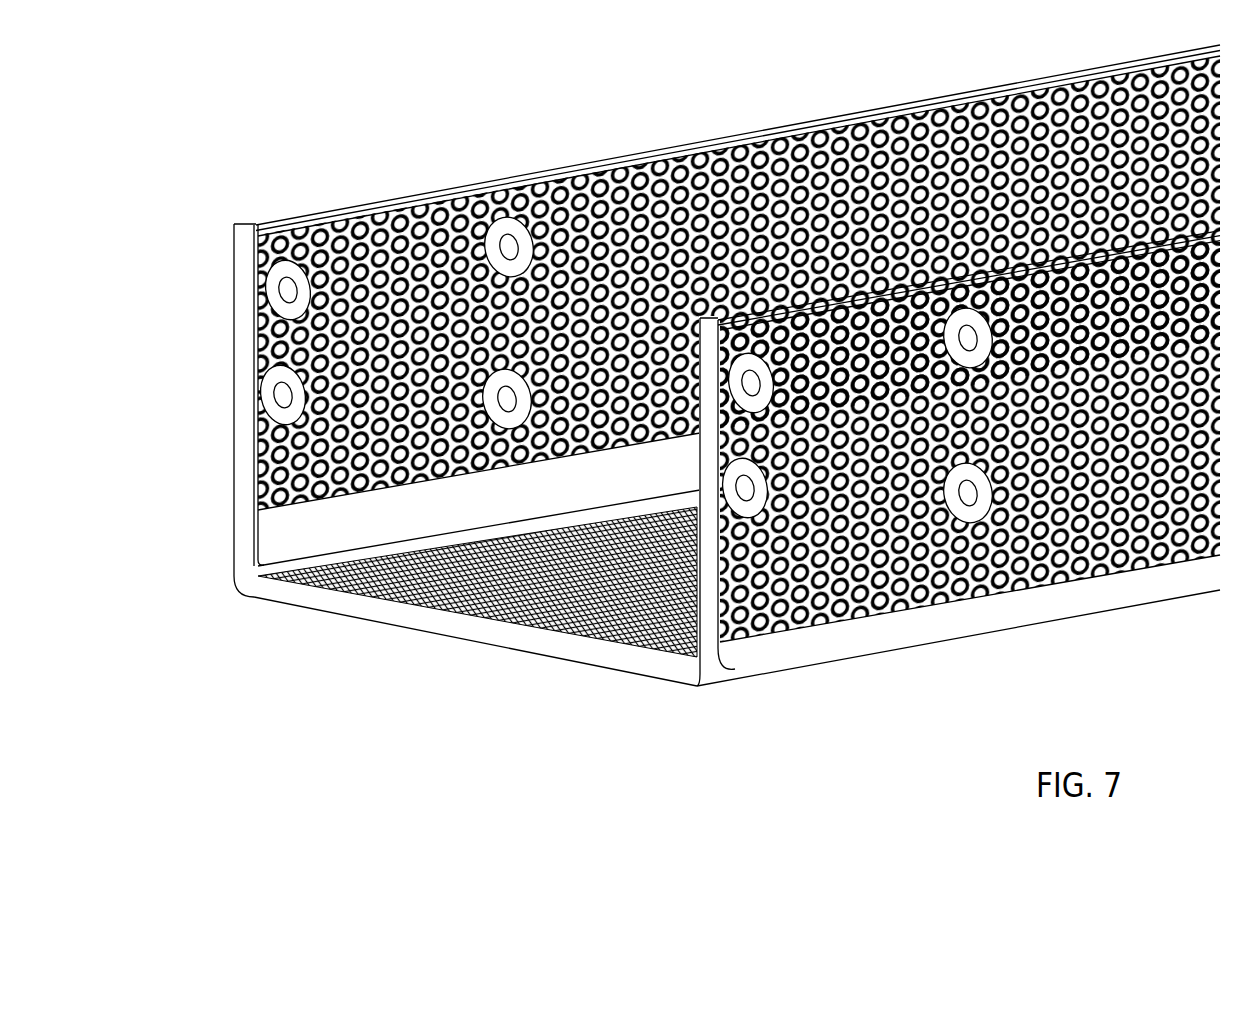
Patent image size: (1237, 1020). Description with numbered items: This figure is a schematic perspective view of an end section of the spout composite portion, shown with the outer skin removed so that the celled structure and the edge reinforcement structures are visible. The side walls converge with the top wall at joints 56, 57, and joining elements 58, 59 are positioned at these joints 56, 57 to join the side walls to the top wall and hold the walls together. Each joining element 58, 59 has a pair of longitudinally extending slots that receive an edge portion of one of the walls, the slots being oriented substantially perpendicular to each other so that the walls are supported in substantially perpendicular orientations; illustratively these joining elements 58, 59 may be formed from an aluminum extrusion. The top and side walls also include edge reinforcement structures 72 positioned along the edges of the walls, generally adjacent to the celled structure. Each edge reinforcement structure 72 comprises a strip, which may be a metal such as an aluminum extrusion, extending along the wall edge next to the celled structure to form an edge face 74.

The joint 56 is at (236, 588).
The joint 57 is at (718, 548).
The joining element 58 is at (737, 376).
The joining element 59 is at (958, 482).
The edge reinforcement structure 72 is at (475, 665).
The edge face 74 is at (477, 632).